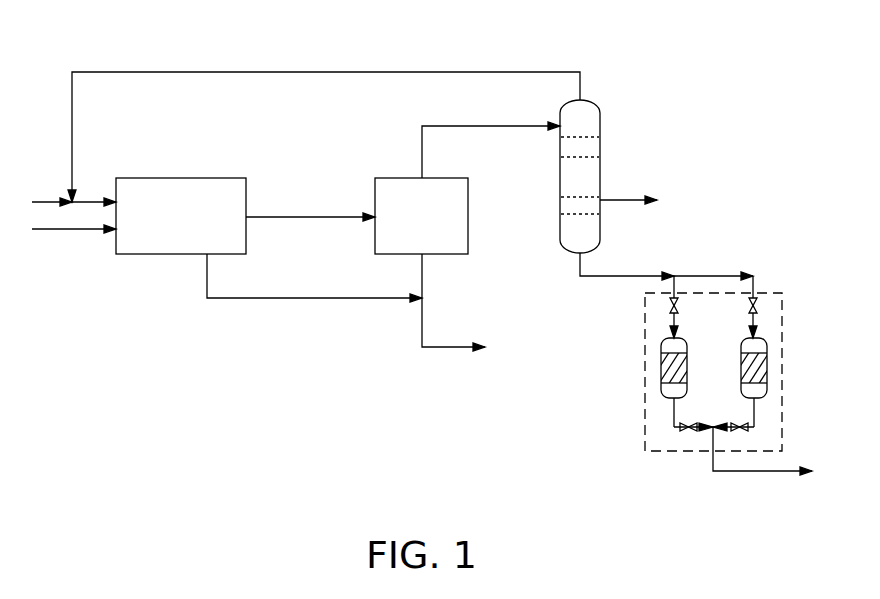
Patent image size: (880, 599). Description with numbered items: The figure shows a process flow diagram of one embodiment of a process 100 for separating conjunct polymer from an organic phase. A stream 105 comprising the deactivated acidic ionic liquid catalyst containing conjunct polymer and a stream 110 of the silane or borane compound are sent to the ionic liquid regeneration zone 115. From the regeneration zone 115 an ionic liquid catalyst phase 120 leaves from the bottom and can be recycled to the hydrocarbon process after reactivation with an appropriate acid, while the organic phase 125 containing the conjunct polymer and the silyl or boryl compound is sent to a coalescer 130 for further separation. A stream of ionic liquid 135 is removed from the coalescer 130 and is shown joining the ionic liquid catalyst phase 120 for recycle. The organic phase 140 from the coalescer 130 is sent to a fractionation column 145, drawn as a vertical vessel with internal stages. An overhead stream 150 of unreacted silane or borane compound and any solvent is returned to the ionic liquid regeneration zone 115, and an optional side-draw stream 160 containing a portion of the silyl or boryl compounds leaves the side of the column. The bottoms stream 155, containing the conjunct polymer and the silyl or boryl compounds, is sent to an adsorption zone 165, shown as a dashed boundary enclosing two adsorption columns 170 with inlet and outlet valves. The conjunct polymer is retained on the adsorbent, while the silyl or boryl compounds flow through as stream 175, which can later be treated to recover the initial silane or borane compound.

The process 100 is at (90, 53).
The stream comprising the deactivated acidic ionic liquid catalyst 105 is at (46, 232).
The stream of the silane or borane compound 110 is at (46, 198).
The ionic liquid regeneration zone 115 is at (181, 177).
The ionic liquid catalyst phase 120 is at (207, 277).
The organic phase 125 is at (301, 213).
The coalescer 130 is at (397, 177).
The stream of ionic liquid 135 is at (423, 278).
The organic phase 140 is at (423, 124).
The fractionation column 145 is at (595, 104).
The overhead stream 150 is at (565, 71).
The bottoms stream 155 is at (583, 267).
The side-draw stream 160 is at (630, 198).
The adsorption zone 165 is at (776, 293).
The adsorption columns 170 is at (750, 338).
The stream of silyl or boryl compounds 175 is at (762, 472).